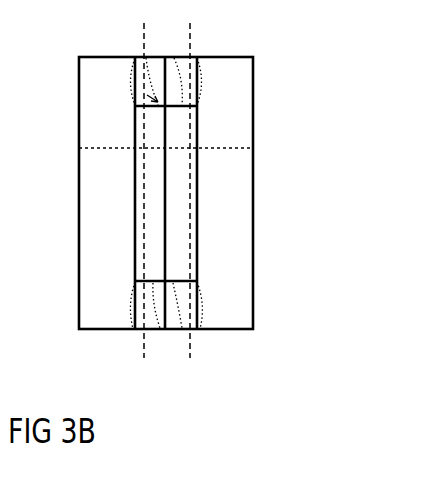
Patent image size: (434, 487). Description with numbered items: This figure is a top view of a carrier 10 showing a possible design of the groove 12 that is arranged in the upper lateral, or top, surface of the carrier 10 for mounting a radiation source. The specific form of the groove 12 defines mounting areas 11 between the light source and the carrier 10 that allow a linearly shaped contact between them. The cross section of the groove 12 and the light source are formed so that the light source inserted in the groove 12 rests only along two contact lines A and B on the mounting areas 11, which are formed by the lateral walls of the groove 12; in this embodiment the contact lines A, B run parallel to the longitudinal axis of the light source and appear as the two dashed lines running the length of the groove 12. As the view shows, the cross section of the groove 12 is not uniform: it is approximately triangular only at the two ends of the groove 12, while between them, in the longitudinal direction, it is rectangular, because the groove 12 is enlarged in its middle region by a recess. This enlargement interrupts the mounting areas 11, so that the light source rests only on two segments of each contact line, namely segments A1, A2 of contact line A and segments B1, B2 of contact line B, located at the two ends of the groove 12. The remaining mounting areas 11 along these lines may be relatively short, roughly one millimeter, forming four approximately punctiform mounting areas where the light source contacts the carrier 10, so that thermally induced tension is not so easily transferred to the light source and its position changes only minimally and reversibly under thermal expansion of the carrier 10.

The carrier 10 is at (93, 218).
The mounting areas 11 is at (135, 106).
The groove 12 is at (170, 280).
The contact line A is at (143, 38).
The contact line B is at (190, 37).
The segment of contact line A A1 is at (130, 329).
The segment of contact line A A2 is at (130, 82).
The segment of contact line B B1 is at (198, 329).
The segment of contact line B B2 is at (203, 77).